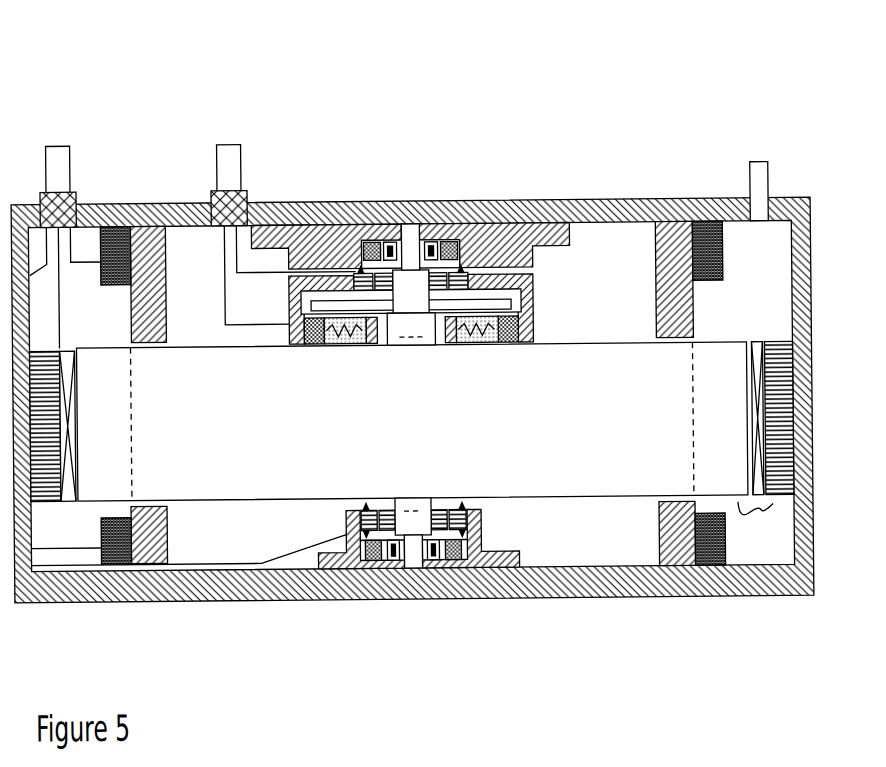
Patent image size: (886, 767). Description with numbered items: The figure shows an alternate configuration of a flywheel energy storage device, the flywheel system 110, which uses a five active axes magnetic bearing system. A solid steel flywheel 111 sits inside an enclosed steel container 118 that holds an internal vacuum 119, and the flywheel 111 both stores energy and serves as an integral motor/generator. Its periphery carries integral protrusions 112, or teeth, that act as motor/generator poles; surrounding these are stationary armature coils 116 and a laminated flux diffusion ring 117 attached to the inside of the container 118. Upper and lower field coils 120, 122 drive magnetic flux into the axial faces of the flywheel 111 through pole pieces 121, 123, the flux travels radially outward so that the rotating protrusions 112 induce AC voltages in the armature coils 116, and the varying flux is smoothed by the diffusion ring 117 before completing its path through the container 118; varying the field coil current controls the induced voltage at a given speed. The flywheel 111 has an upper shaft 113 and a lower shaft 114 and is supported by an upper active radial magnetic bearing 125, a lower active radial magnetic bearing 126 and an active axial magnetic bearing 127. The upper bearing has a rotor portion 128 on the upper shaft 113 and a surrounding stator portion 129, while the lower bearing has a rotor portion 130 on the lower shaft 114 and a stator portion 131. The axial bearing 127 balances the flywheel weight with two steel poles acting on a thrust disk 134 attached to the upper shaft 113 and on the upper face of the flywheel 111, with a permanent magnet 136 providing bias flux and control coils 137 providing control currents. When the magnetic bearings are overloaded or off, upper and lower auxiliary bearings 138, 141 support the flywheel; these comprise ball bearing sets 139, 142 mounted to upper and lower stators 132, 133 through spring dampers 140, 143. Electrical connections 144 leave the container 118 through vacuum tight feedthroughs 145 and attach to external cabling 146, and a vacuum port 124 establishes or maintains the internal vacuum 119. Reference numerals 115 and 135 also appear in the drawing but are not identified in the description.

The flywheel system 110 is at (77, 66).
The flywheel 111 is at (249, 502).
The protrusions 112 is at (727, 344).
The upper shaft 113 is at (408, 226).
The lower shaft 114 is at (415, 571).
The lead wire 115 is at (753, 508).
The armature coils 116 is at (756, 346).
The laminated flux diffusion ring 117 is at (790, 503).
The container 118 is at (813, 433).
The internal vacuum 119 is at (617, 550).
The upper field coil 120 is at (725, 246).
The pole piece 121 is at (657, 250).
The lower field coil 122 is at (726, 551).
The pole piece 123 is at (655, 556).
The vacuum port 124 is at (771, 175).
The upper active radial magnetic bearing 125 is at (487, 270).
The lower active radial magnetic bearing 126 is at (496, 519).
The active axial magnetic bearing 127 is at (479, 350).
The rotor portion 128 is at (370, 240).
The stator portion 129 is at (358, 239).
The rotor portion 130 is at (443, 498).
The stator portion 131 is at (470, 508).
The upper stator 132 is at (557, 249).
The lower stator 133 is at (318, 554).
The thrust disk 134 is at (524, 304).
The magnet 135 is at (324, 345).
The permanent magnet 136 is at (388, 338).
The control coils 137 is at (522, 342).
The upper auxiliary bearing 138 is at (389, 238).
The ball bearing set 139 is at (434, 240).
The spring damper 140 is at (451, 240).
The lower auxiliary bearing 141 is at (381, 565).
The ball bearing set 142 is at (440, 563).
The spring damper 143 is at (455, 563).
The electrical connections 144 is at (237, 262).
The vacuum tight feedthroughs 145 is at (82, 198).
The external cabling 146 is at (218, 160).